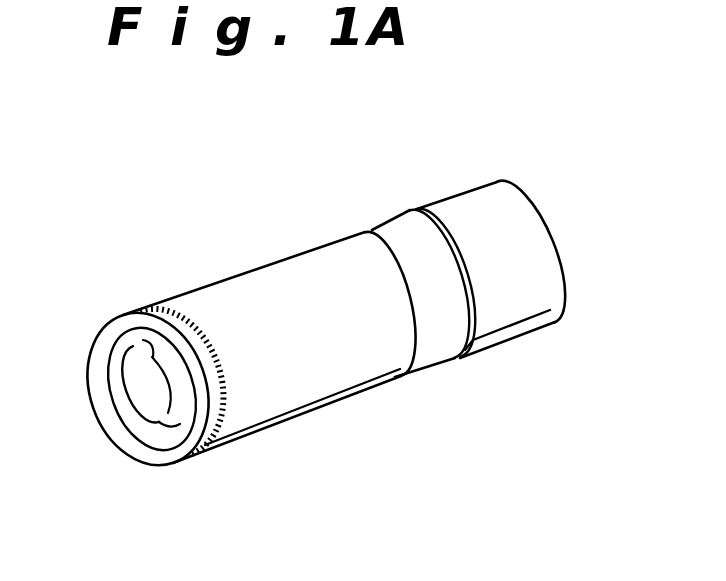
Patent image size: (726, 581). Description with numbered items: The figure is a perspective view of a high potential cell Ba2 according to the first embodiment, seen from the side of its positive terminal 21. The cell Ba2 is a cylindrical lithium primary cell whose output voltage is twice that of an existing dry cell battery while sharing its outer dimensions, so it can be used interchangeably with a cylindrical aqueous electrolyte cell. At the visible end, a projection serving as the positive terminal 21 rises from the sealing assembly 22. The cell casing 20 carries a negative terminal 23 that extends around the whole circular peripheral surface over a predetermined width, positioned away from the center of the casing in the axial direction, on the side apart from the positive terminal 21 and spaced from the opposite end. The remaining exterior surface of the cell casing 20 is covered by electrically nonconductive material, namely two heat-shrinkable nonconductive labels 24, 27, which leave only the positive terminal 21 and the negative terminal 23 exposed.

The high potential cell Ba2 is at (275, 258).
The cell casing 20 is at (328, 360).
The positive terminal 21 is at (150, 400).
The sealing assembly 22 is at (112, 385).
The negative terminal 23 is at (435, 338).
The heat-shrinkable nonconductive label 24 is at (273, 382).
The heat-shrinkable nonconductive label 27 is at (527, 272).